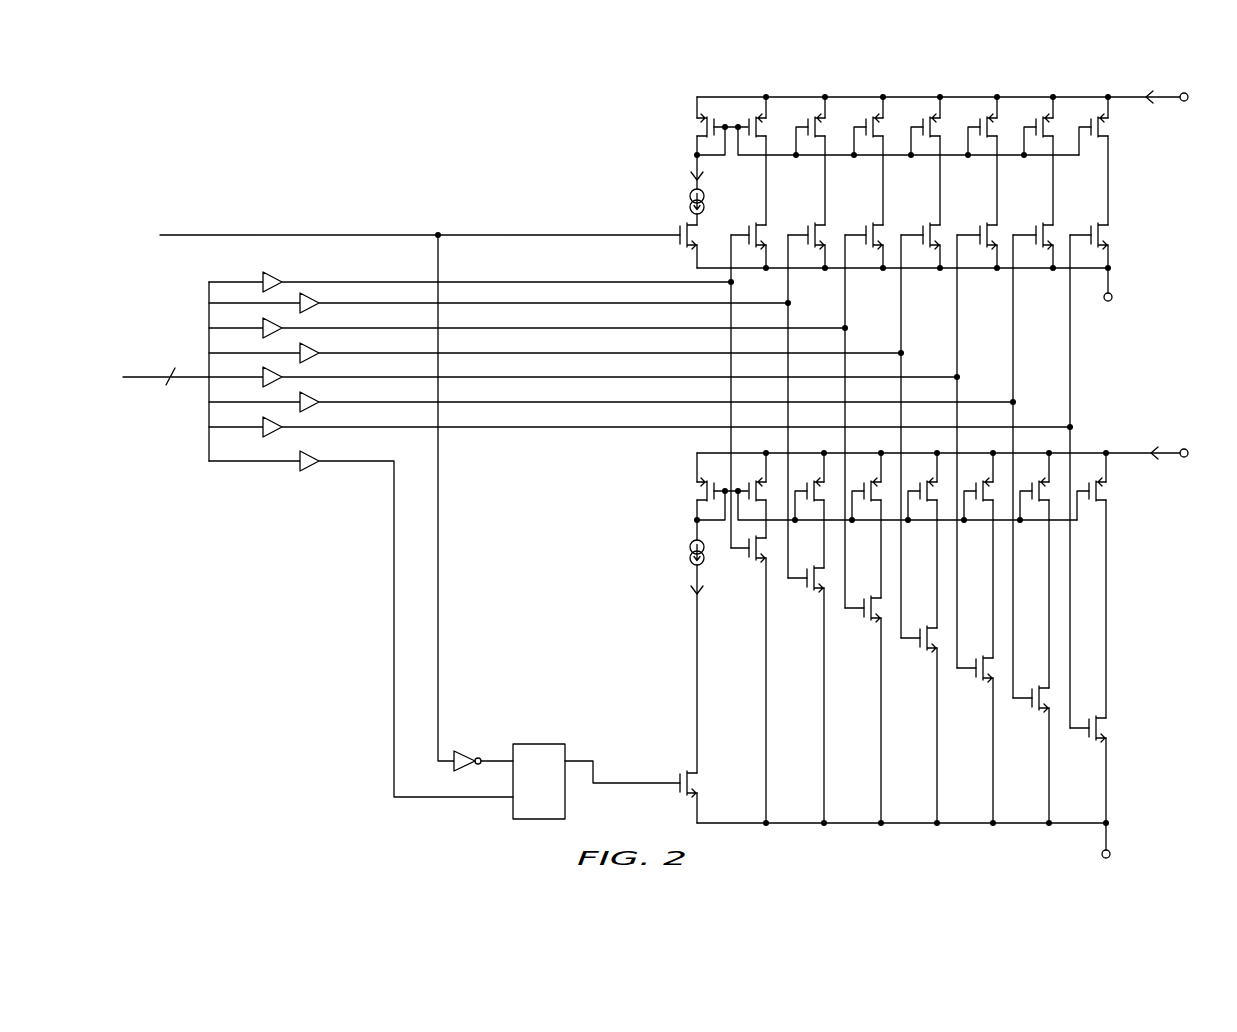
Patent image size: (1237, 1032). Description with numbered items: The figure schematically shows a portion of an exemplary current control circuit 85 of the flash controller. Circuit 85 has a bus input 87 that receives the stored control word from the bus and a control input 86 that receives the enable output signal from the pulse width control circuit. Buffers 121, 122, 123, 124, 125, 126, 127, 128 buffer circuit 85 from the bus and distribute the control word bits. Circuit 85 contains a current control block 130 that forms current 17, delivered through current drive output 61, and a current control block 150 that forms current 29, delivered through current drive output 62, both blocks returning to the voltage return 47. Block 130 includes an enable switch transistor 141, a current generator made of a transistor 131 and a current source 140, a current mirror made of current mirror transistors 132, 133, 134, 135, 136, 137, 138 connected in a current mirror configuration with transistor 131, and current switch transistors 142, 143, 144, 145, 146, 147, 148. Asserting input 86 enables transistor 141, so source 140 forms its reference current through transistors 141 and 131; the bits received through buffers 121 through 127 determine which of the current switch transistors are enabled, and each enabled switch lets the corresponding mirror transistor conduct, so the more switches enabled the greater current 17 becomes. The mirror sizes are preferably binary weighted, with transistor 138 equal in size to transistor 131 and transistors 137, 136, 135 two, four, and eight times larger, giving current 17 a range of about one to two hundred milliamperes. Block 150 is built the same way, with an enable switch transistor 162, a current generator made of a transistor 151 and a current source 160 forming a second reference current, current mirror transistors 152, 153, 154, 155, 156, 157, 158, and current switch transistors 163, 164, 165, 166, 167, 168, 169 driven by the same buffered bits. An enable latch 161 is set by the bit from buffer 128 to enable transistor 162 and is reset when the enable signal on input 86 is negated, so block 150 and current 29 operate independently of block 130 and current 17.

The current control circuit 85 is at (401, 861).
The control input 86 is at (163, 234).
The bus input 87 is at (129, 376).
The buffer 121 is at (280, 271).
The buffer 122 is at (313, 312).
The buffer 123 is at (268, 320).
The buffer 124 is at (313, 347).
The buffer 125 is at (268, 370).
The buffer 126 is at (313, 396).
The buffer 127 is at (268, 420).
The buffer 128 is at (313, 455).
The current control block 130 is at (660, 154).
The transistor 131 is at (697, 130).
The current mirror transistor 132 is at (763, 125).
The current mirror transistor 133 is at (822, 125).
The current mirror transistor 134 is at (880, 125).
The current mirror transistor 135 is at (937, 125).
The current mirror transistor 136 is at (994, 125).
The current mirror transistor 137 is at (1050, 125).
The current mirror transistor 138 is at (1108, 129).
The current source 140 is at (690, 196).
The transistor 141 is at (679, 231).
The current switch transistor 142 is at (749, 228).
The current switch transistor 143 is at (808, 228).
The current switch transistor 144 is at (866, 228).
The current switch transistor 145 is at (923, 228).
The current switch transistor 146 is at (980, 228).
The current switch transistor 147 is at (1036, 228).
The current switch transistor 148 is at (1091, 228).
The current control block 150 is at (648, 556).
The transistor 151 is at (697, 493).
The current mirror transistor 152 is at (767, 476).
The current mirror transistor 153 is at (825, 476).
The current mirror transistor 154 is at (882, 476).
The current mirror transistor 155 is at (938, 476).
The current mirror transistor 156 is at (994, 476).
The current mirror transistor 157 is at (1050, 476).
The current mirror transistor 158 is at (1108, 490).
The current source 160 is at (690, 552).
The enable latch 161 is at (535, 745).
The transistor 162 is at (690, 770).
The current switch transistor 163 is at (749, 550).
The current switch transistor 164 is at (807, 580).
The current switch transistor 165 is at (864, 610).
The current switch transistor 166 is at (920, 640).
The current switch transistor 167 is at (976, 670).
The current switch transistor 168 is at (1032, 700).
The current switch transistor 169 is at (1089, 730).
The current 17 is at (1148, 103).
The current 29 is at (1152, 446).
The voltage return 47 is at (1111, 300).
The current drive output 61 is at (1186, 93).
The current drive output 62 is at (1188, 451).